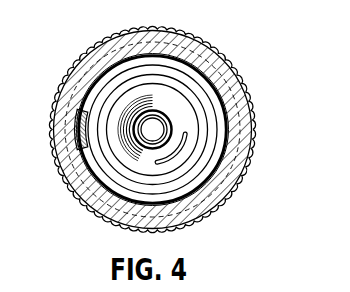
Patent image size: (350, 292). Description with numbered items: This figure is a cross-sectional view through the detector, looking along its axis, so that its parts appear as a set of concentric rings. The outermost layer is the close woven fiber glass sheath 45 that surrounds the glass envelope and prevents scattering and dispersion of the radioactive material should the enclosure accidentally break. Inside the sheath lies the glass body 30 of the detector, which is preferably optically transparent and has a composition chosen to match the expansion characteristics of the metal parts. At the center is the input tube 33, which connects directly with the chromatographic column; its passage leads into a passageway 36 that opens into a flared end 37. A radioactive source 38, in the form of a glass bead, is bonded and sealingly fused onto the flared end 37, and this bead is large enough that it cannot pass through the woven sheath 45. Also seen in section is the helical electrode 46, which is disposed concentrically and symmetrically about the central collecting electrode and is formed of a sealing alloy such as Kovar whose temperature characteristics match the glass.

The body 30 is at (85, 78).
The input tube 33 is at (152, 106).
The passageway 36 is at (139, 149).
The flared end 37 is at (200, 121).
The radioactive source 38 is at (184, 141).
The fiber glass sheath 45 is at (228, 65).
The helical electrode 46 is at (78, 141).